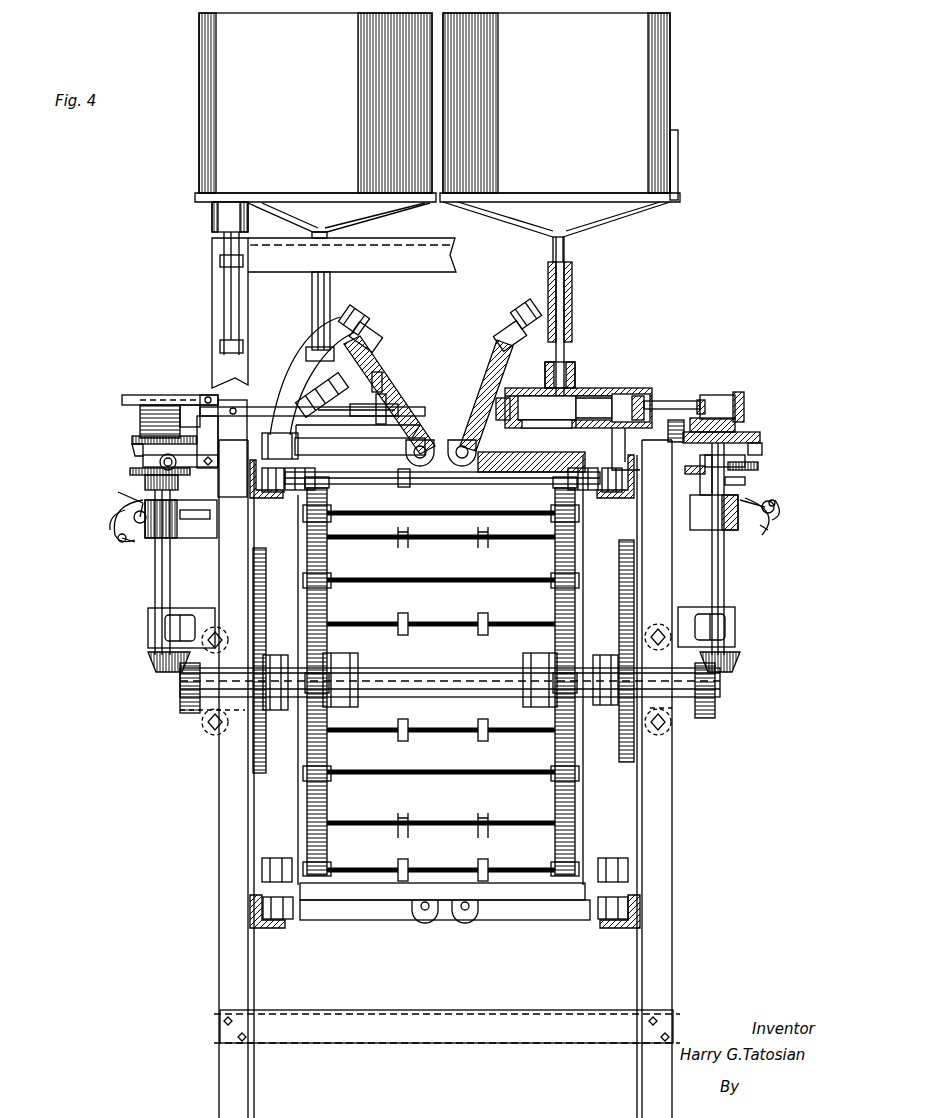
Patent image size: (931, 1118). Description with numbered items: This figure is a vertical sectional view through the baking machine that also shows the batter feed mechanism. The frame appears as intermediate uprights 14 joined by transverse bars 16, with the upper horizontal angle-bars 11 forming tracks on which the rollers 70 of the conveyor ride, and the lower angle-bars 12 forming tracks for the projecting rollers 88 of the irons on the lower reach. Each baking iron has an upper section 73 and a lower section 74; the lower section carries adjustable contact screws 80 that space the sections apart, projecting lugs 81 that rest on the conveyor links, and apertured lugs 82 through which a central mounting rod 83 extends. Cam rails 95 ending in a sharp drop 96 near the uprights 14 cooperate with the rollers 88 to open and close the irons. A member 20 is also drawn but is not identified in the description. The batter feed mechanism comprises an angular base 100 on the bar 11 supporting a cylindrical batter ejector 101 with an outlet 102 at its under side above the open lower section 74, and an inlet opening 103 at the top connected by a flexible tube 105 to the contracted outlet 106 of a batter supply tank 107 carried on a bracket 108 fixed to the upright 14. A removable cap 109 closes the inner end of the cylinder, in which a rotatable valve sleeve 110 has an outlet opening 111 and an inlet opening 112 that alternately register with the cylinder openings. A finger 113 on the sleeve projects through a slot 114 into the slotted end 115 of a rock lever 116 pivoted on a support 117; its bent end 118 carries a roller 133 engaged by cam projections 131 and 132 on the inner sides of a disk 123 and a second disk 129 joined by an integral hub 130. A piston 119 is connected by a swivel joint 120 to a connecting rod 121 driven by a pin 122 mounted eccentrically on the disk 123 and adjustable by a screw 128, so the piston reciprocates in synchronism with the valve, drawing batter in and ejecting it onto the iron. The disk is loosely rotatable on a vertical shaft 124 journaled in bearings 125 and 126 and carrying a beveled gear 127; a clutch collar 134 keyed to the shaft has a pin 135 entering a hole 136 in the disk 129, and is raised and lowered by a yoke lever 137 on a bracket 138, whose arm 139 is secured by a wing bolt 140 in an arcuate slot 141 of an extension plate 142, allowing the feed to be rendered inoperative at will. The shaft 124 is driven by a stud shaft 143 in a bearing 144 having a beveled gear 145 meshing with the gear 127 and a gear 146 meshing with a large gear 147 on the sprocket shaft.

The batter supply tank 107 is at (688, 163).
The contracted outlet 106 is at (562, 254).
The transverse bars 16 is at (440, 1013).
The intermediate uprights 14 is at (212, 362).
The bracket 108 is at (224, 292).
The flexible tube 105 is at (330, 298).
The cam rails 95 is at (565, 326).
The inlet opening 103 is at (575, 382).
The sharp drop 96 is at (312, 348).
The projecting rollers 88 is at (439, 314).
The adjustable contact screws 80 is at (378, 343).
The upper section 73 is at (385, 360).
The rock lever 116 is at (335, 396).
The slotted end 115 is at (386, 374).
The slot 114 is at (390, 400).
The finger 113 is at (400, 416).
The bent end 118 is at (244, 425).
The lower section 74 is at (451, 669).
The projecting lugs 81 is at (290, 474).
The apertured lugs 82 is at (412, 490).
The central mounting rod 83 is at (440, 542).
The rack bar 20 is at (327, 558).
The upper horizontal angle-bars 11 is at (268, 498).
The rollers 70 is at (252, 505).
The lower horizontal angle-bars 12 is at (622, 926).
The large gear 147 is at (260, 600).
The gear 146 is at (266, 660).
The stud shaft 143 is at (470, 676).
The bearing 144 is at (208, 735).
The beveled gear 145 is at (180, 692).
The beveled gear 127 is at (152, 664).
The bearing 126 is at (148, 630).
The vertical shaft 124 is at (158, 598).
The bearing 125 is at (176, 524).
The support 117 is at (222, 470).
The disk 123 is at (130, 434).
The cam projections 131 is at (128, 447).
The roller 133 is at (143, 461).
The cam projections 132 is at (140, 470).
The disk 129 is at (140, 478).
The annularly channelled collar 134 is at (745, 481).
The integral hub 130 is at (712, 440).
The hole 136 is at (690, 470).
The pin 135 is at (700, 480).
The yoke lever 137 is at (140, 506).
The bracket 138 is at (146, 516).
The wing bolt 140 is at (132, 522).
The arcuate slot 141 is at (112, 522).
The extension plate 142 is at (118, 535).
The arm 139 is at (128, 545).
The cylindrical batter ejector 101 is at (606, 390).
The rotatable valve sleeve 110 is at (522, 388).
The outlet opening 111 is at (535, 422).
The inlet opening 112 is at (594, 408).
The piston 119 is at (640, 393).
The swivel joint 120 is at (660, 402).
The connecting rod 121 is at (706, 398).
The screw 128 is at (735, 400).
The pin 122 is at (744, 408).
The removable cap 109 is at (505, 416).
The outlet 102 is at (548, 428).
The angular base 100 is at (625, 450).